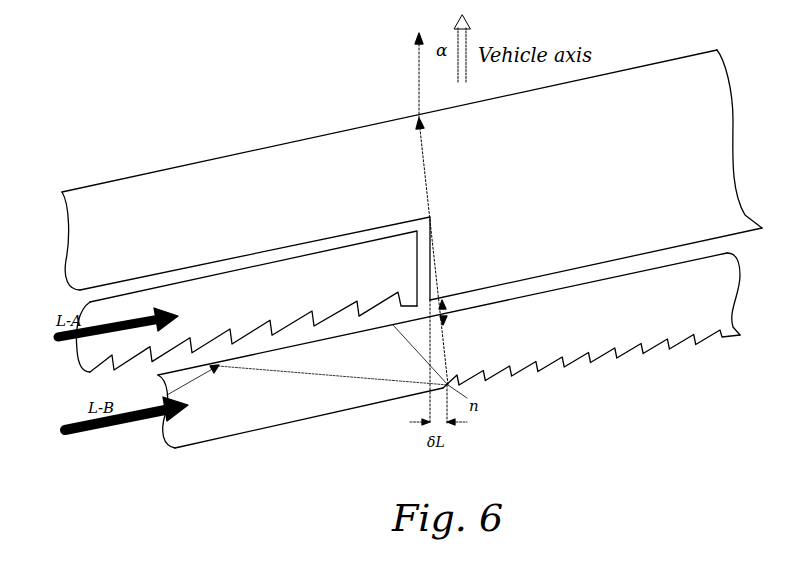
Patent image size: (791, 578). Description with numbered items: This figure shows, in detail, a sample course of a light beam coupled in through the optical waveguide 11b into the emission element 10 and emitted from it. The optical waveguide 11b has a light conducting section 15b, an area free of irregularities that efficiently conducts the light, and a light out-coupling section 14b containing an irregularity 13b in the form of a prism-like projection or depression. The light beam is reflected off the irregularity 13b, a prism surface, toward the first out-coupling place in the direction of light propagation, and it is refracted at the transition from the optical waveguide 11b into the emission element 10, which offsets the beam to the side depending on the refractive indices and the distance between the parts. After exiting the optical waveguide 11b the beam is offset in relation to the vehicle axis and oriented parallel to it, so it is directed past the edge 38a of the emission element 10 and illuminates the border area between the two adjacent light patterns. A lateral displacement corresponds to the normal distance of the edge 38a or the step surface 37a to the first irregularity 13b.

The emission element 10 is at (639, 110).
The edge 38a is at (429, 213).
The bracket wall 37a is at (419, 259).
The optical waveguide 11b is at (226, 409).
The light conducting section 15b is at (393, 412).
The irregularity 13b is at (589, 365).
The light out-coupling section 14b is at (558, 401).